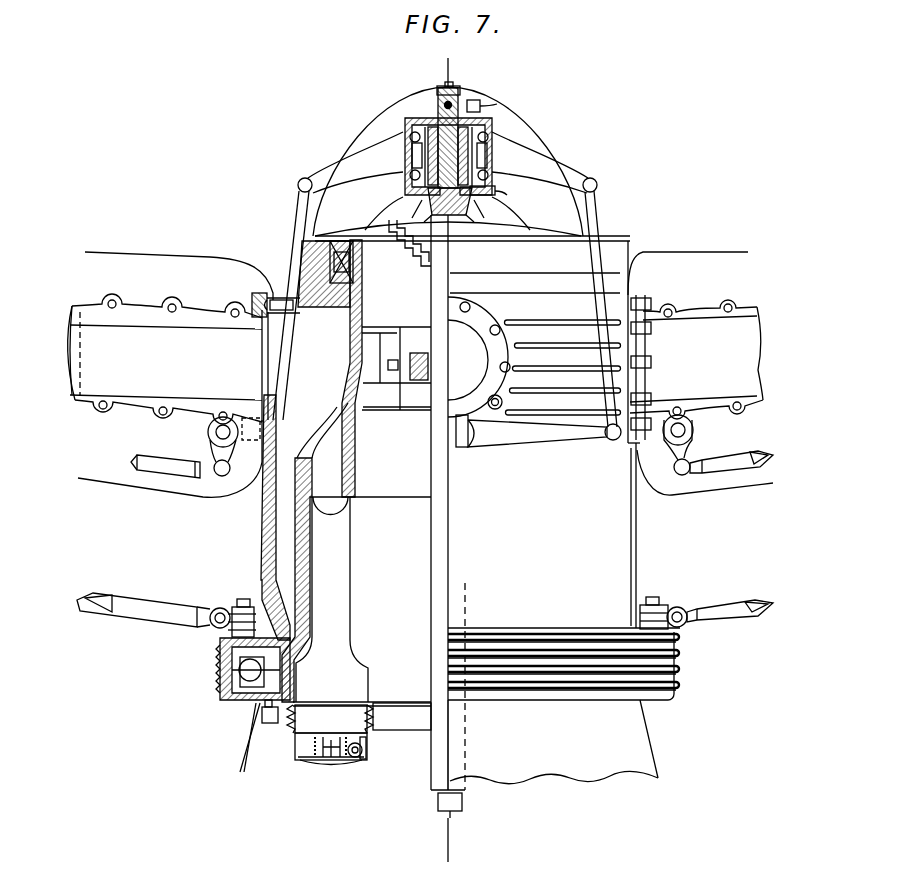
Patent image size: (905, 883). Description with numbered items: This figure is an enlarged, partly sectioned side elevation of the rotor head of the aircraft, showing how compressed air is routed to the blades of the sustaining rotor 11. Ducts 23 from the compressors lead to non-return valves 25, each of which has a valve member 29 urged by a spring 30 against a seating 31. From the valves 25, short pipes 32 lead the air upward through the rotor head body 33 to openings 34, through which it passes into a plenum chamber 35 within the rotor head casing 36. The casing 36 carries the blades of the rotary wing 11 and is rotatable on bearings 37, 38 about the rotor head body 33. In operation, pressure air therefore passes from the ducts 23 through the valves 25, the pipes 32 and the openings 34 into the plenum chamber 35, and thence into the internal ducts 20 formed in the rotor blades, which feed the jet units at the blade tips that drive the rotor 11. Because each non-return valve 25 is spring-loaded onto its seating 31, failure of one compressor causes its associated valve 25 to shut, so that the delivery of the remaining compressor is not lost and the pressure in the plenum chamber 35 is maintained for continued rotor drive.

The sustaining rotor 11 is at (133, 268).
The internal ducts 20 is at (76, 312).
The ducts 23 is at (323, 765).
The non-return valves 25 is at (293, 744).
The valve member 29 is at (352, 760).
The spring 30 is at (350, 747).
The seating 31 is at (362, 762).
The short pipes 32 is at (340, 619).
The rotor head body 33 is at (293, 543).
The openings 34 is at (326, 419).
The plenum chamber 35 is at (316, 327).
The rotor head casing 36 is at (263, 505).
The bearing 37 is at (280, 620).
The bearing 38 is at (343, 267).